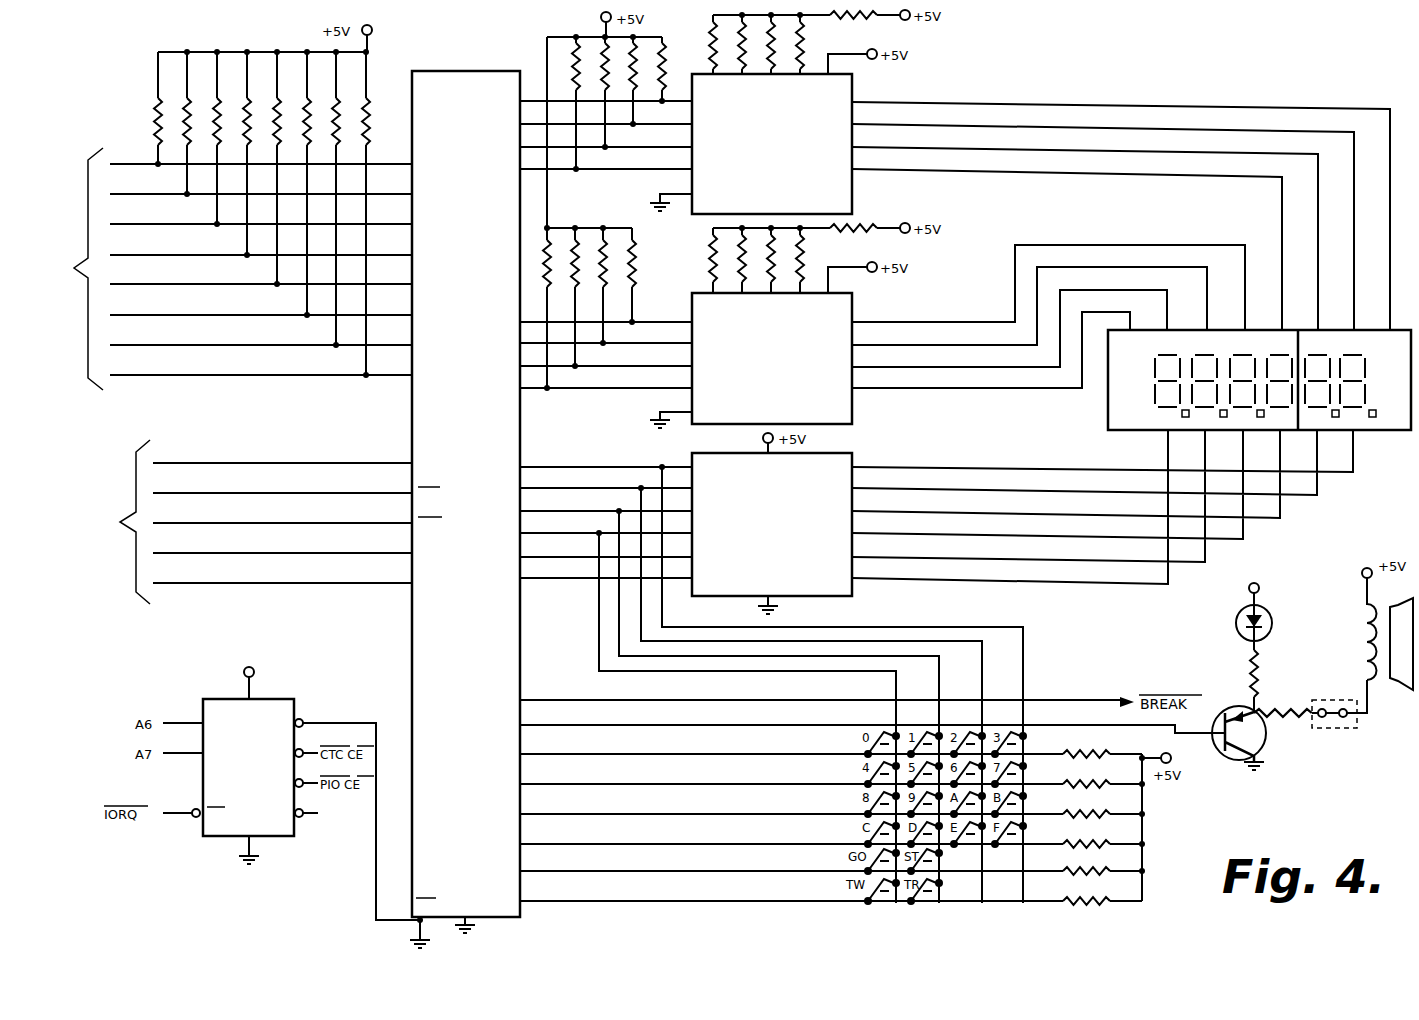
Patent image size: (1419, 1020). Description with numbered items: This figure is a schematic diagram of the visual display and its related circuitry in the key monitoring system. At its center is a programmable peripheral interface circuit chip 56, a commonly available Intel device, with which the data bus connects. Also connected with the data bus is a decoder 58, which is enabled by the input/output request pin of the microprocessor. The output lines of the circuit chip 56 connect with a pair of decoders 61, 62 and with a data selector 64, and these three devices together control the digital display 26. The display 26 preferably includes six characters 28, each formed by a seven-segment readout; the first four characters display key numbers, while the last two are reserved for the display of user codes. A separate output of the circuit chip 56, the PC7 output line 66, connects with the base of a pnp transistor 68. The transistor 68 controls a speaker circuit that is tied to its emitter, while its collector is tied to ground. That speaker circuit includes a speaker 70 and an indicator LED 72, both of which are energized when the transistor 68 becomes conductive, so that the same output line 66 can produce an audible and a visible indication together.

The visual display 26 is at (1233, 362).
The character 28 is at (1198, 352).
The Intel 8255 circuit chip 56 is at (427, 622).
The decoder 58 is at (229, 700).
The decoder 61 is at (852, 192).
The decoder 62 is at (852, 413).
The data selector 64 is at (852, 592).
The PC7 output line 66 is at (640, 724).
The pnp transistor 68 is at (1262, 757).
The speaker 70 is at (1404, 683).
The indicator LED 72 is at (1237, 630).